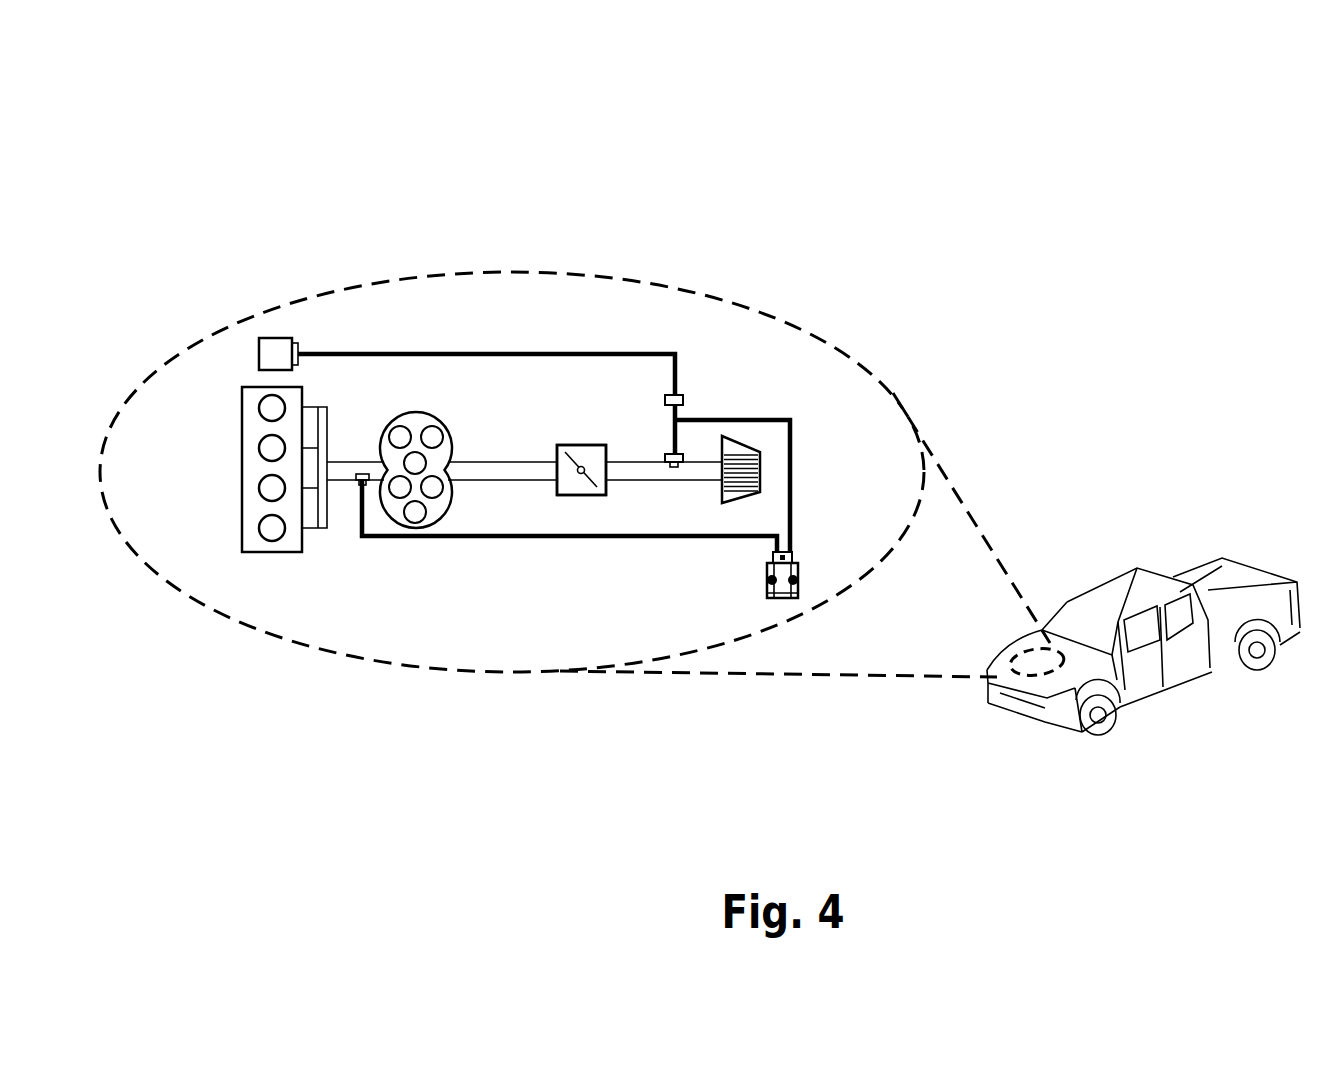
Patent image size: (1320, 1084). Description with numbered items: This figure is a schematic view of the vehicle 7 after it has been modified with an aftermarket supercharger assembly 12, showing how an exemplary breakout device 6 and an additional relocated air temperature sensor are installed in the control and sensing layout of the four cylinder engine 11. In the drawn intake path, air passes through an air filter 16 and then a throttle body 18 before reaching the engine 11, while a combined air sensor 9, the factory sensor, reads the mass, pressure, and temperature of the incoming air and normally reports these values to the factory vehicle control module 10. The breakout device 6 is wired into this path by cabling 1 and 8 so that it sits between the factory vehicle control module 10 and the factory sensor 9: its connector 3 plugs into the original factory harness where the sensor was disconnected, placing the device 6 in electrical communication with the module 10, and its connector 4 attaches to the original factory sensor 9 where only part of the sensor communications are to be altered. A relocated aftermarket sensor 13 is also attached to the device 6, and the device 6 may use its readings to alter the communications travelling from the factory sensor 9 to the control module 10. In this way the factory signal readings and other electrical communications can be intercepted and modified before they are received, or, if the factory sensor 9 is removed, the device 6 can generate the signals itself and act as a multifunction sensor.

The cable 1 is at (788, 417).
The connector 3 is at (685, 400).
The connector 4 is at (668, 456).
The breakout device 6 is at (800, 575).
The vehicle 7 is at (1125, 573).
The cable 8 is at (525, 353).
The combined air sensor 9 is at (672, 467).
The factory vehicle control module 10 is at (274, 336).
The engine 11 is at (240, 411).
The supercharger assembly 12 is at (389, 525).
The relocated aftermarket sensor 13 is at (355, 490).
The air filter 16 is at (745, 497).
The throttle body 18 is at (558, 497).